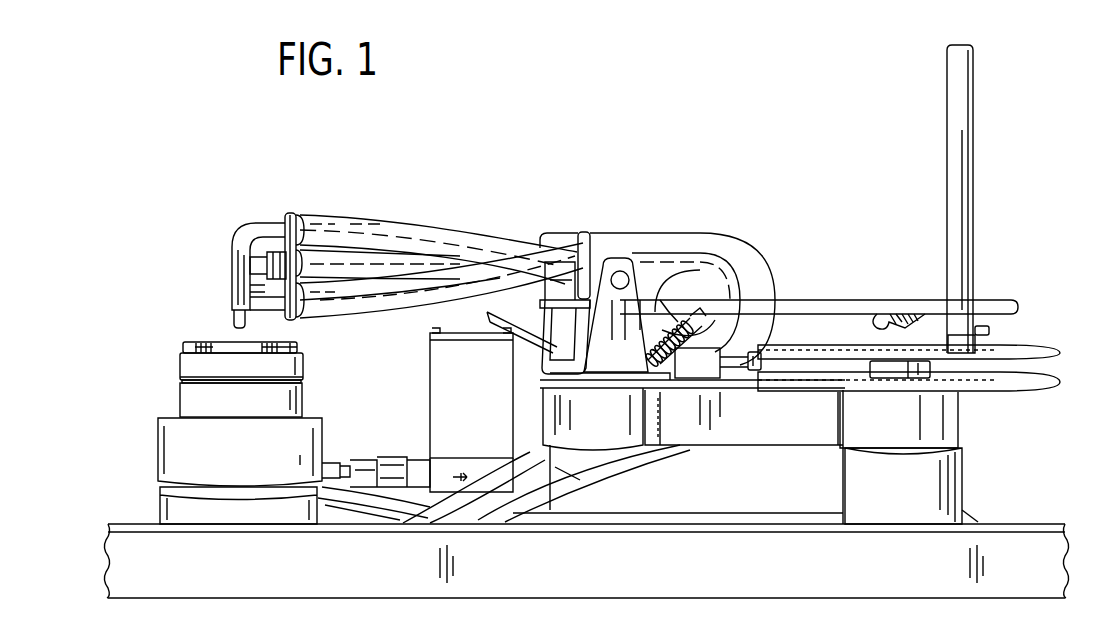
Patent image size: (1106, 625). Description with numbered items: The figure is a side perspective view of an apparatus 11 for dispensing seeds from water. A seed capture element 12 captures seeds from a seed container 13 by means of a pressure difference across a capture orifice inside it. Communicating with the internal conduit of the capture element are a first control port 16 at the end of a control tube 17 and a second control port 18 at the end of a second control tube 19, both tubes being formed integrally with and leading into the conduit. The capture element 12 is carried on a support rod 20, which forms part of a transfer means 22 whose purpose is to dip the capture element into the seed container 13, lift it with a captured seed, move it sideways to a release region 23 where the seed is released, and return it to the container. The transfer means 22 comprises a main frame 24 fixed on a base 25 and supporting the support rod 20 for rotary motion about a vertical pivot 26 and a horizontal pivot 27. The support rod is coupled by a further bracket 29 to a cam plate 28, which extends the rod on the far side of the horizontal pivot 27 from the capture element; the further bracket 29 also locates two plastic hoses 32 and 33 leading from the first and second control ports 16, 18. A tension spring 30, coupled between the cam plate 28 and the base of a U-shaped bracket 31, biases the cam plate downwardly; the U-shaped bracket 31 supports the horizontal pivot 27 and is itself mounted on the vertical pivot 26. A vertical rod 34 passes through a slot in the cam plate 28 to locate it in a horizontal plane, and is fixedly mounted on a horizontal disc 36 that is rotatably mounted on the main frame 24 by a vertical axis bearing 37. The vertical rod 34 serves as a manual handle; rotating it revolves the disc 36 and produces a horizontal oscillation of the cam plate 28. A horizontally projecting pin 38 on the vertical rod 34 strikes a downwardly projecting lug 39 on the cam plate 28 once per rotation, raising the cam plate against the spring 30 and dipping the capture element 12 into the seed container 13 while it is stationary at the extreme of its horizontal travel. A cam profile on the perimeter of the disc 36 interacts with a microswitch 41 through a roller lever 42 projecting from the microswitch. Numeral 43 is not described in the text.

The apparatus for dispensing seeds 11 is at (424, 168).
The seed capture element 12 is at (232, 320).
The seed container 13 is at (185, 396).
The first control port 16 is at (345, 235).
The control tube 17 is at (268, 222).
The second control port 18 is at (340, 305).
The second control tube 19 is at (257, 286).
The support rod 20 is at (397, 267).
The transfer means 22 is at (837, 207).
The release region 23 is at (586, 561).
The main frame 24 is at (678, 457).
The base 25 is at (967, 522).
The vertical pivot 26 is at (598, 382).
The horizontal pivot 27 is at (622, 272).
The cam plate 28 is at (820, 300).
The further bracket 29 is at (568, 238).
The tension spring 30 is at (661, 320).
The U-shaped bracket 31 is at (551, 345).
The plastic hose 32 is at (462, 244).
The plastic hose 33 is at (547, 263).
The vertical rod 34 is at (966, 136).
The horizontal disc 36 is at (1025, 348).
The vertical axis bearing 37 is at (898, 380).
The horizontally projecting pin 38 is at (991, 317).
The downwardly projecting lug 39 is at (872, 314).
The microswitch 41 is at (702, 378).
The roller lever 42 is at (758, 370).
The valve block 43 is at (546, 425).